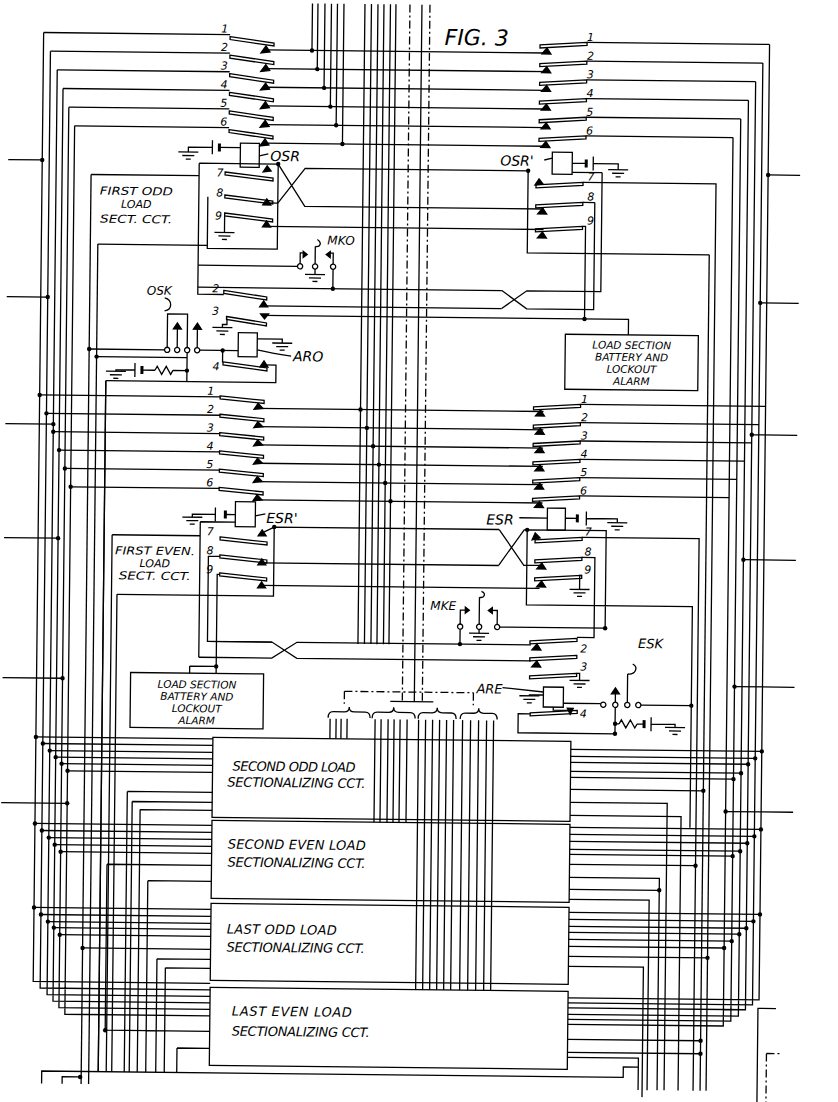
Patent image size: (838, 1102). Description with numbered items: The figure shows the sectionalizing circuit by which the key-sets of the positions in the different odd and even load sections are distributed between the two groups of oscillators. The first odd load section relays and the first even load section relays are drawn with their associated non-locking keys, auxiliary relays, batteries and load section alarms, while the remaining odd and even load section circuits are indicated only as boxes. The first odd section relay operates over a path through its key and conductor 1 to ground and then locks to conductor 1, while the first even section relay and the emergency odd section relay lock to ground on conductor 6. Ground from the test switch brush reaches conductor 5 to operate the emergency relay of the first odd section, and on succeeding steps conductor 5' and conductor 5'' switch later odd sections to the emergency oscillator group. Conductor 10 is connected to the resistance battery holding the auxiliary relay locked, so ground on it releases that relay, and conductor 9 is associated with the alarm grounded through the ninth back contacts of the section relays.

The conductor 10 is at (111, 514).
The conductor 6 is at (718, 520).
The conductor 5 is at (718, 959).
The conductor 5' is at (617, 945).
The conductor 5'' is at (605, 1031).
The conductor 9 is at (100, 1030).
The conductor 1 is at (92, 1046).